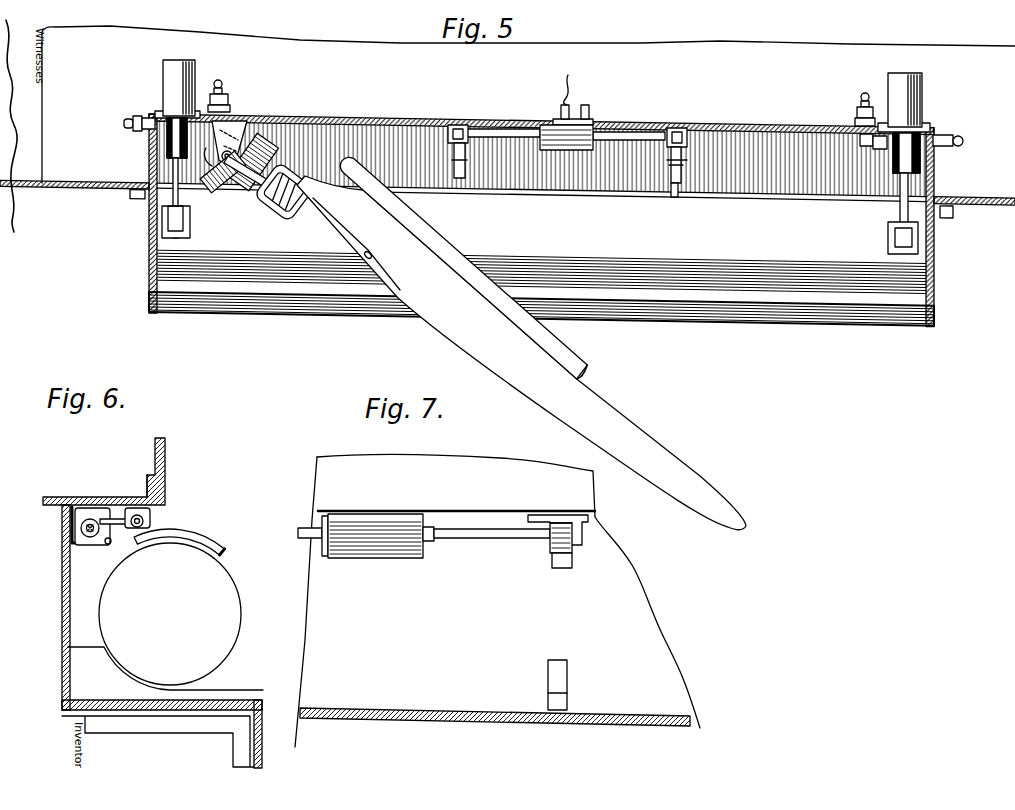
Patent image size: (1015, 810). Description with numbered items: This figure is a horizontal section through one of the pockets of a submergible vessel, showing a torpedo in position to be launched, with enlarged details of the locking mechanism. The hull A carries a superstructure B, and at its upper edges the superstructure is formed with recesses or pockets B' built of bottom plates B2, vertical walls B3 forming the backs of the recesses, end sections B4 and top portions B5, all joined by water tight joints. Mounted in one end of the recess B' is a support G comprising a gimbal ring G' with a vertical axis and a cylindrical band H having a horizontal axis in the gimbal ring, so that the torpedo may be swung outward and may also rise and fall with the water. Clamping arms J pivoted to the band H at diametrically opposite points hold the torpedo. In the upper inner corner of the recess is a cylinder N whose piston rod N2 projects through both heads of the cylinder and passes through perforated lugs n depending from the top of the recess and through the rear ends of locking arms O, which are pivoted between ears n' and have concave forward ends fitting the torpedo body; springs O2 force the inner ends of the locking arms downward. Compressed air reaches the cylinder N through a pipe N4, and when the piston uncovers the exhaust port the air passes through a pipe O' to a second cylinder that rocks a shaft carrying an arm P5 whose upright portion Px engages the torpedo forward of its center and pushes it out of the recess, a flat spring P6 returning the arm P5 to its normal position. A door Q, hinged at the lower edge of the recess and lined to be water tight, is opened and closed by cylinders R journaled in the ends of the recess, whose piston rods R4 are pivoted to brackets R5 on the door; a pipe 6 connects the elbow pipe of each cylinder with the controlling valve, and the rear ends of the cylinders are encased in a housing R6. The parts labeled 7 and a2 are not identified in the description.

In FIG. 5, the hull A is at (528, 104).
In FIG. 6, the superstructure B is at (115, 470).
In FIG. 7, the superstructure B is at (497, 600).
In FIG. 5, the recess or pocket B' is at (541, 144).
In FIG. 6, the recess or pocket B' is at (165, 616).
In FIG. 7, the recess or pocket B' is at (495, 682).
In FIG. 5, the bottom plate B2 is at (752, 187).
In FIG. 6, the bottom plate B2 is at (166, 720).
In FIG. 5, the vertical wall B3 is at (778, 127).
In FIG. 6, the vertical wall B3 is at (63, 612).
In FIG. 7, the vertical wall B3 is at (643, 618).
In FIG. 5, the end section B4 is at (977, 190).
In FIG. 6, the top portion B5 is at (110, 496).
In FIG. 5, the door Q is at (693, 298).
In FIG. 5, the cylinder R is at (168, 138).
In FIG. 5, the piston rod R4 is at (903, 212).
In FIG. 5, the bracket R5 is at (957, 252).
In FIG. 5, the housing R6 is at (933, 99).
In FIG. 5, the pin 7 is at (123, 123).
In FIG. 5, the pipe 6 is at (224, 89).
In FIG. 5, the plate a2 is at (234, 133).
In FIG. 5, the band H is at (256, 144).
In FIG. 5, the support G is at (250, 184).
In FIG. 5, the gimbal ring G' is at (209, 182).
In FIG. 5, the clamping arm J is at (289, 213).
In FIG. 5, the arm P5 is at (443, 244).
In FIG. 5, the flat spring P6 is at (368, 196).
In FIG. 5, the upright portion Px is at (582, 373).
In FIG. 5, the cylinder N is at (559, 121).
In FIG. 6, the cylinder N is at (97, 507).
In FIG. 7, the cylinder N is at (377, 550).
In FIG. 5, the piston rod N2 is at (641, 132).
In FIG. 6, the piston rod N2 is at (92, 540).
In FIG. 7, the piston rod N2 is at (482, 541).
In FIG. 5, the pipe N4 is at (587, 96).
In FIG. 5, the pipe O' is at (569, 79).
In FIG. 5, the lug n is at (573, 123).
In FIG. 6, the lug n is at (61, 535).
In FIG. 7, the lug n is at (564, 543).
In FIG. 5, the ear n' is at (647, 190).
In FIG. 6, the ear n' is at (161, 503).
In FIG. 7, the ear n' is at (551, 506).
In FIG. 5, the locking arm O is at (567, 187).
In FIG. 6, the locking arm O is at (179, 532).
In FIG. 7, the locking arm O is at (560, 577).
In FIG. 6, the spring O2 is at (109, 542).